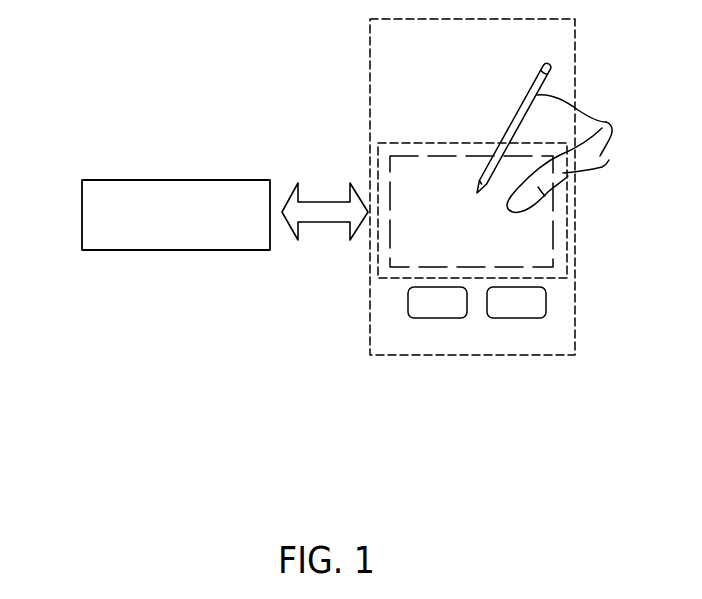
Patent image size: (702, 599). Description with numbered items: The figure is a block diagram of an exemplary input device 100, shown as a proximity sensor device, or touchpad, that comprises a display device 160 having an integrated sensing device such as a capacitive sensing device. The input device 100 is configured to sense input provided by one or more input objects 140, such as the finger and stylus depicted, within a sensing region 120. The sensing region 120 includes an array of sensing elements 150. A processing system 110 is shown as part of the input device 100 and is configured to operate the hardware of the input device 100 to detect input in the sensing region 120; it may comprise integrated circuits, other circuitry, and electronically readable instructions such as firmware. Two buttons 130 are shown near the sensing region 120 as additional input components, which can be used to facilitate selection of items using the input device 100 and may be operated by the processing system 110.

The input device 100 is at (317, 48).
The processing system 110 is at (82, 209).
The sensing region 120 is at (567, 233).
The buttons 130 is at (438, 318).
The input objects 140 is at (606, 122).
The sensing elements 150 is at (432, 156).
The display device 160 is at (575, 46).